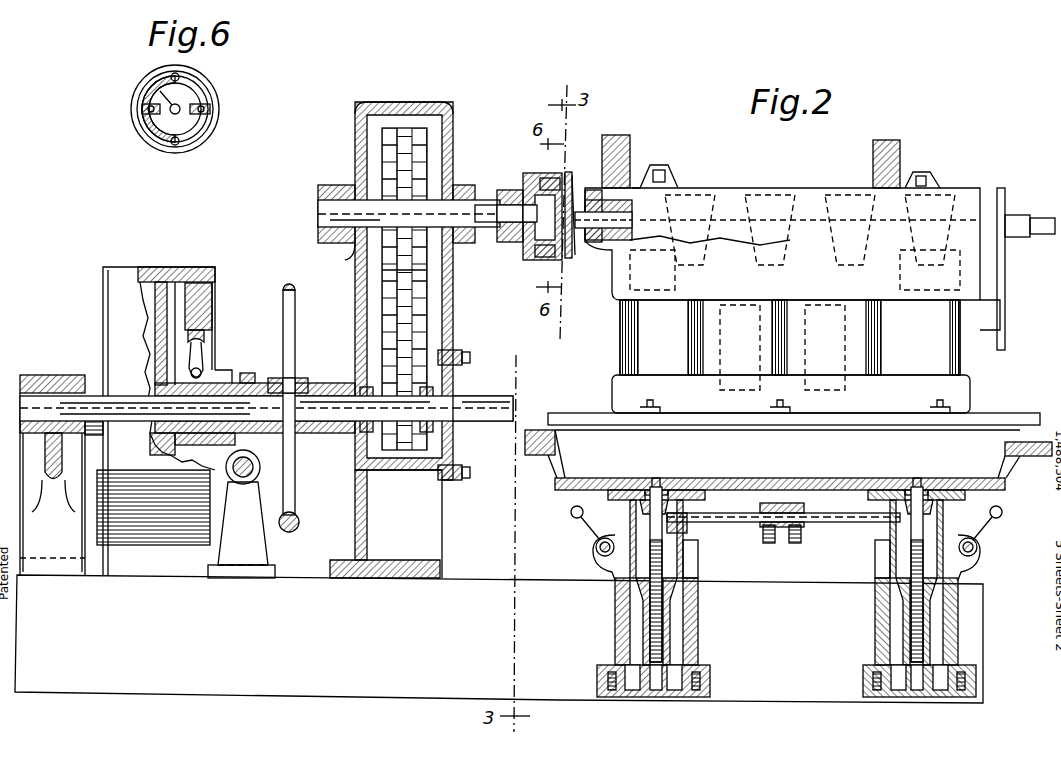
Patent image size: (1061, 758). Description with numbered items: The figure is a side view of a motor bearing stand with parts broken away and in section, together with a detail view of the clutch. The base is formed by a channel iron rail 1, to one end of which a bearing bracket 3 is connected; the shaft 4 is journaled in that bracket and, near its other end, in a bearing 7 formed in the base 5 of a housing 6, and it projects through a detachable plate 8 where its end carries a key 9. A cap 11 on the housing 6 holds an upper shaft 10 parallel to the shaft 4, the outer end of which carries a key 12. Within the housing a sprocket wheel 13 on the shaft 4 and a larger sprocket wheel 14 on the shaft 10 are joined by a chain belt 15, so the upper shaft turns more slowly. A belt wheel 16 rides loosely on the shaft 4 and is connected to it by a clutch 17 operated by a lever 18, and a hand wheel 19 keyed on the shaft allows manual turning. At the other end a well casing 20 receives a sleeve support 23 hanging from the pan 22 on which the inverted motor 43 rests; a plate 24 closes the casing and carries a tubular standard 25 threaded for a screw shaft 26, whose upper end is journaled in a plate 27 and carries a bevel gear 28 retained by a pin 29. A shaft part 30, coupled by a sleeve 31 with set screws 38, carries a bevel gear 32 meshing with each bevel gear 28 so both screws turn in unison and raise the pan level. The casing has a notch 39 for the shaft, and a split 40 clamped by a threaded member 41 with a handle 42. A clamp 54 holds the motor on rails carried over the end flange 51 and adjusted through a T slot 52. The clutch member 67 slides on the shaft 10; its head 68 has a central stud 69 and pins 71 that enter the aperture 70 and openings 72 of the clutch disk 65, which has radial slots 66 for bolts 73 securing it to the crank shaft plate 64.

In FIG. 2, the channel iron rail 1 is at (499, 639).
In FIG. 2, the bearing bracket 3 is at (28, 453).
In FIG. 2, the shaft 4 is at (58, 396).
In FIG. 2, the housing base 5 is at (357, 518).
In FIG. 2, the housing 6 is at (355, 302).
In FIG. 2, the bearing 7 is at (324, 383).
In FIG. 2, the detachable plate 8 is at (458, 366).
In FIG. 2, the key 9 is at (470, 424).
In FIG. 2, the shaft 10 is at (318, 214).
In FIG. 2, the cap 11 is at (452, 134).
In FIG. 2, the key 12 is at (498, 205).
In FIG. 2, the sprocket wheel 13 is at (440, 470).
In FIG. 2, the sprocket wheel 14 is at (372, 192).
In FIG. 2, the chain belt 15 is at (382, 272).
In FIG. 2, the belt wheel 16 is at (113, 309).
In FIG. 2, the clutch 17 is at (198, 312).
In FIG. 2, the lever 18 is at (243, 485).
In FIG. 2, the hand wheel 19 is at (283, 303).
In FIG. 2, the well casing 20 is at (698, 623).
In FIG. 2, the pan 22 is at (1005, 480).
In FIG. 2, the sleeve support 23 is at (630, 530).
In FIG. 2, the plate 24 is at (650, 698).
In FIG. 2, the tubular standard 25 is at (643, 628).
In FIG. 2, the screw shaft 26 is at (663, 640).
In FIG. 2, the plate 27 is at (915, 480).
In FIG. 2, the bevel gear 28 is at (640, 490).
In FIG. 2, the pin 29 is at (657, 478).
In FIG. 2, the shaft part 30 is at (730, 523).
In FIG. 2, the coupling sleeve 31 is at (782, 503).
In FIG. 2, the bevel gear 32 is at (668, 510).
In FIG. 2, the set screw 38 is at (785, 544).
In FIG. 2, the notch 39 is at (698, 556).
In FIG. 2, the split 40 is at (600, 571).
In FIG. 2, the threaded member 41 is at (596, 547).
In FIG. 2, the handle 42 is at (571, 510).
In FIG. 2, the inverted motor 43 is at (960, 360).
In FIG. 2, the end flange 51 is at (548, 420).
In FIG. 2, the T slot 52 is at (778, 425).
In FIG. 2, the clamp 54 is at (630, 145).
In FIG. 2, the crank shaft plate 64 is at (570, 175).
In FIG. 6, the clutch disk 65 is at (219, 104).
In FIG. 2, the clutch disk 65 is at (570, 262).
In FIG. 6, the radial slot 66 is at (142, 107).
In FIG. 2, the clutch member 67 is at (512, 190).
In FIG. 2, the clutch head 68 is at (530, 258).
In FIG. 2, the central stud 69 is at (596, 244).
In FIG. 6, the central aperture 70 is at (155, 82).
In FIG. 2, the pin 71 is at (548, 177).
In FIG. 6, the opening 72 is at (179, 75).
In FIG. 6, the bolt 73 is at (148, 112).